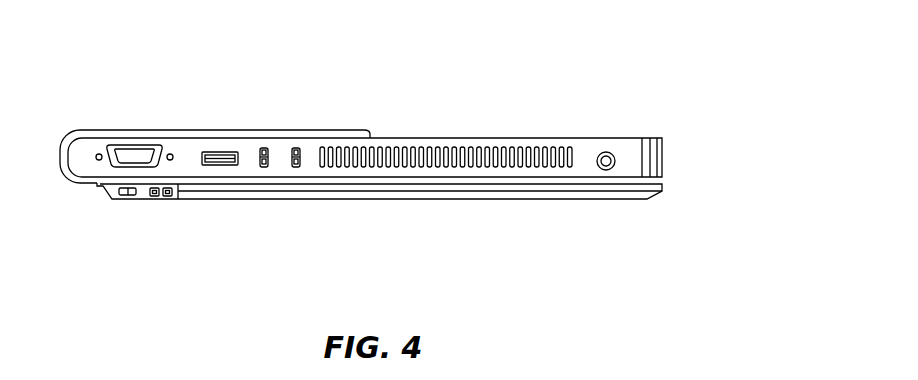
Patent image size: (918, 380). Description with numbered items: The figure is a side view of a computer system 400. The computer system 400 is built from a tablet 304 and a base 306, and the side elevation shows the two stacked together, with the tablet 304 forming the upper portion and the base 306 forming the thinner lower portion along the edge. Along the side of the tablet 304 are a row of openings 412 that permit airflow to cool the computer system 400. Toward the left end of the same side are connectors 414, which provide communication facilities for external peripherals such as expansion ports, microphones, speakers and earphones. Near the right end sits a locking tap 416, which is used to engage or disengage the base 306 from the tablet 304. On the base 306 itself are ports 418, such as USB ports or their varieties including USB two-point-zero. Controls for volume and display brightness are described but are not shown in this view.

The computer system 400 is at (718, 44).
The tablet 304 is at (590, 150).
The base 306 is at (303, 192).
The openings 412 is at (478, 150).
The connectors 414 is at (143, 153).
The locking tap 416 is at (607, 157).
The ports 418 is at (167, 198).